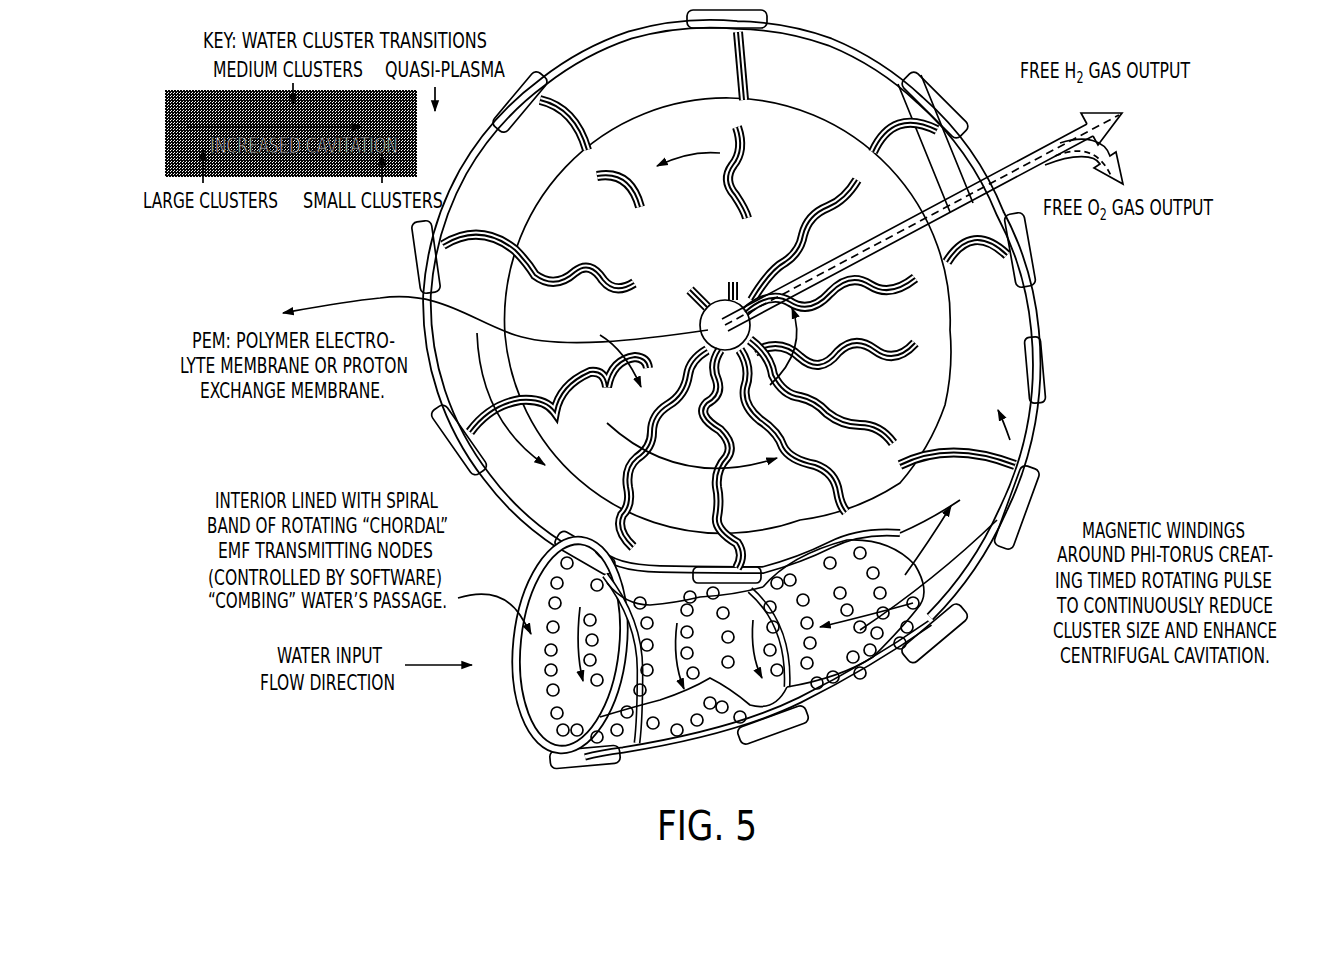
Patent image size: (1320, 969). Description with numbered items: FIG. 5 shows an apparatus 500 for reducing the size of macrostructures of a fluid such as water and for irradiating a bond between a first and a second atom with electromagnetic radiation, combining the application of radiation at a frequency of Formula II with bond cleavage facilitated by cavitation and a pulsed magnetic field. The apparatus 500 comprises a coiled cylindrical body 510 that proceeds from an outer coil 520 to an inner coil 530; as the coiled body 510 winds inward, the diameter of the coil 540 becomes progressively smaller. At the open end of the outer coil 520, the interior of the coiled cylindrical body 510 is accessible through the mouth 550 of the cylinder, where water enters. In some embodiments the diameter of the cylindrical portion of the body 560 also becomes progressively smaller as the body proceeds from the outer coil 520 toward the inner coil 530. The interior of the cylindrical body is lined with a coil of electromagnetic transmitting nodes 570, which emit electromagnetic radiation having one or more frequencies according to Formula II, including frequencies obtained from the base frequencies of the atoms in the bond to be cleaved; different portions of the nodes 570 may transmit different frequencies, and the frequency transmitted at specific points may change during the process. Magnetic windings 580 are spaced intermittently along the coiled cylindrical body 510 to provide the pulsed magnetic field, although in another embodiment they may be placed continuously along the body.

The apparatus 500 is at (1167, 513).
The coiled cylindrical body 510 is at (983, 313).
The outer coil 520 is at (853, 57).
The inner coil 530 is at (929, 118).
The coil 540 is at (822, 84).
The mouth 550 is at (530, 670).
The cylindrical portion of the body 560 is at (547, 743).
The electromagnetic transmitting nodes 570 is at (723, 720).
The magnetic windings 580 is at (1160, 513).